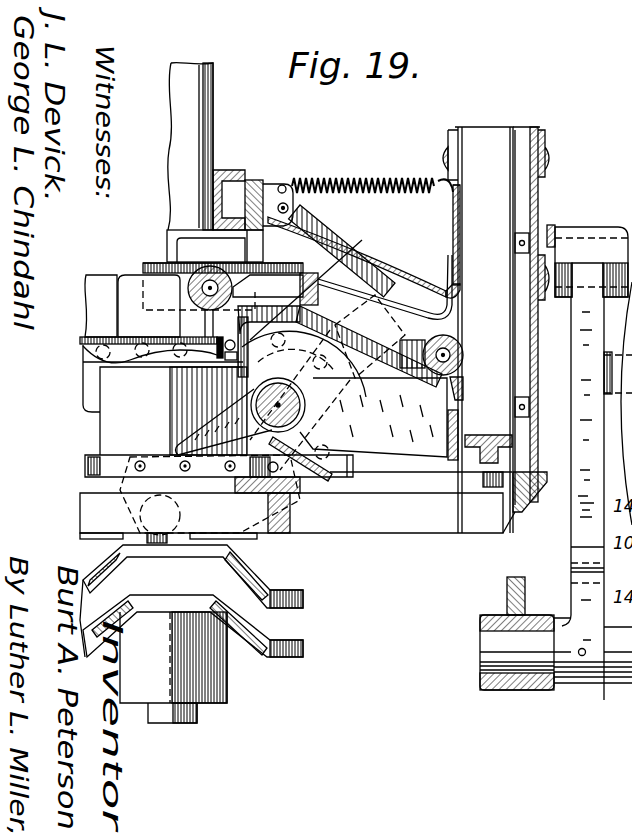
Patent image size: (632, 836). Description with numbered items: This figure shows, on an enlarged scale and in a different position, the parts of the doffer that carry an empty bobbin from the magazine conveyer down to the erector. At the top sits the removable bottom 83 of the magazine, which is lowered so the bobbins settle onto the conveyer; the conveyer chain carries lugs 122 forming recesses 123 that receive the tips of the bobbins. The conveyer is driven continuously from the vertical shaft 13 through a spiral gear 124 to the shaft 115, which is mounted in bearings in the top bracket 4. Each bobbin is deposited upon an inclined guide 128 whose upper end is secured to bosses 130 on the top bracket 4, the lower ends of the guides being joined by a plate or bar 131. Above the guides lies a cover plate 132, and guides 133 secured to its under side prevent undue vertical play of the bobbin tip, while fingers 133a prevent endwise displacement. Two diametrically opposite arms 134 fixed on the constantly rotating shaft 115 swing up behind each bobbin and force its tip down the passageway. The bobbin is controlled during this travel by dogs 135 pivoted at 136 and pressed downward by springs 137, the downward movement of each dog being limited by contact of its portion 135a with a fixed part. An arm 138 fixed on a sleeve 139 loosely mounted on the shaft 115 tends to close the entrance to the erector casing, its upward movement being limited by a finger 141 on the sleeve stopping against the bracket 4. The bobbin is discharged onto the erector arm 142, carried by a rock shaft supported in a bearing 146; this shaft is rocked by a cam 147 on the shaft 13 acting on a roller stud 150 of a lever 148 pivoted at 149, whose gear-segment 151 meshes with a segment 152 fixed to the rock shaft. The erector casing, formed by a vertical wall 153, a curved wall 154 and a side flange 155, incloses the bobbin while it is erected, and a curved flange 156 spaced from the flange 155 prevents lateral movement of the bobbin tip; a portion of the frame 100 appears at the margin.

The top bracket 4 is at (440, 520).
The vertical shaft 13 is at (197, 720).
The removable bottom 83 is at (83, 341).
The frame 100 is at (614, 754).
The shaft 115 is at (252, 402).
The lugs 122 is at (103, 285).
The recesses 123 is at (137, 272).
The spiral gear 124 is at (619, 403).
The inclined guide 128 is at (345, 302).
The bosses 130 is at (340, 258).
The plate or bar 131 is at (457, 480).
The cover plate 132 is at (372, 300).
The guides 133 is at (448, 322).
The fingers 133a is at (465, 392).
The arms 134 is at (392, 318).
The dogs 135 is at (310, 236).
The portion of dog 135a is at (276, 187).
The pivot 136 is at (284, 202).
The springs 137 is at (371, 180).
The arm 138 is at (392, 448).
The sleeve 139 is at (265, 418).
The finger 141 is at (185, 444).
The erector arm 142 is at (470, 438).
The bearing 146 is at (522, 690).
The cam 147 is at (304, 648).
The lever 148 is at (580, 503).
The pivot 149 is at (593, 251).
The roller stud 150 is at (597, 498).
The gear-segment 151 is at (582, 548).
The segment 152 is at (585, 577).
The vertical wall 153 is at (541, 216).
The curved wall 154 is at (491, 132).
The side flange 155 is at (459, 126).
The curved flange 156 is at (515, 135).